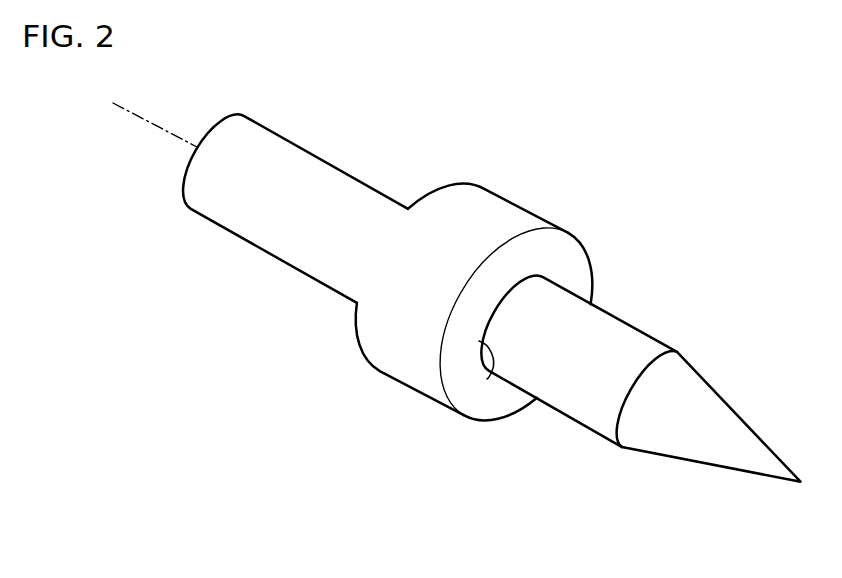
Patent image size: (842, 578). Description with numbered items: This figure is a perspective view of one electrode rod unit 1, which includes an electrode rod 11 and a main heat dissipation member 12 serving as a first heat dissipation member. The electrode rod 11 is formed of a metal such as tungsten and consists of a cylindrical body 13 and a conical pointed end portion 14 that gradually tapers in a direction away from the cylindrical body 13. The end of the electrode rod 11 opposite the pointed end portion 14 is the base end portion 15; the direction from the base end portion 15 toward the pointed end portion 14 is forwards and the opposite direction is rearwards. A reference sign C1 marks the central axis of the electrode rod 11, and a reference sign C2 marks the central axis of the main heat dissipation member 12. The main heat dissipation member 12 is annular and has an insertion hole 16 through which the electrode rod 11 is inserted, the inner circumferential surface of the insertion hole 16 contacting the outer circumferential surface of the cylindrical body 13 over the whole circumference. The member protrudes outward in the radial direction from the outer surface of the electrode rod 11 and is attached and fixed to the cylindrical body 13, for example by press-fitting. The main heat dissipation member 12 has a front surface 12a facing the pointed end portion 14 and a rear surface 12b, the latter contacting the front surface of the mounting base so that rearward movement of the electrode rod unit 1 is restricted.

The electrode rod unit 1 is at (671, 218).
The electrode rod 11 is at (634, 407).
The main heat dissipation member 12 is at (502, 261).
The front surface 12a is at (560, 252).
The rear surface 12b is at (437, 192).
The cylindrical body 13 is at (543, 407).
The pointed end portion 14 is at (662, 443).
The base end portion 15 is at (183, 200).
The insertion hole 16 is at (490, 381).
The central axis of the electrode rod C1 is at (143, 156).
The central axis of the main heat dissipation member C2 is at (142, 122).